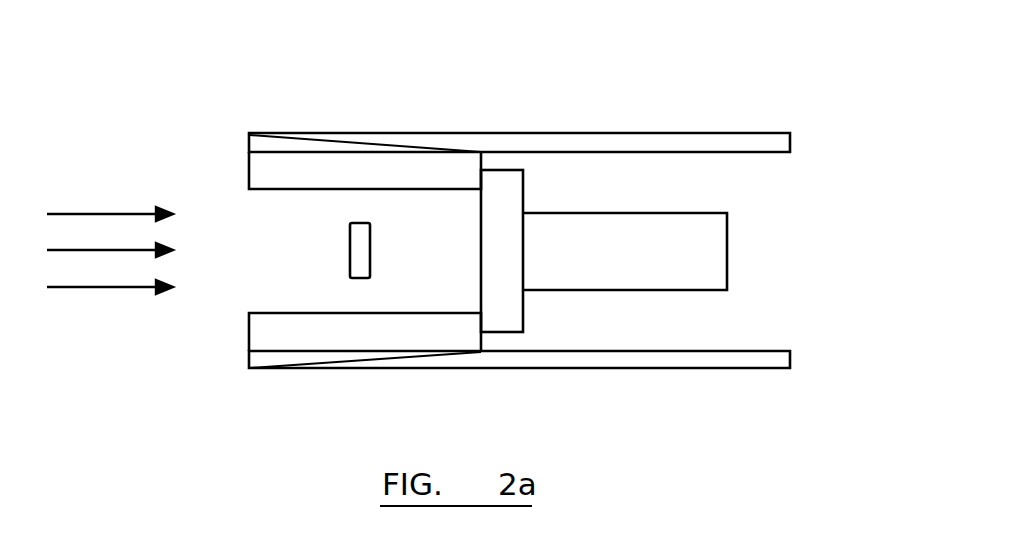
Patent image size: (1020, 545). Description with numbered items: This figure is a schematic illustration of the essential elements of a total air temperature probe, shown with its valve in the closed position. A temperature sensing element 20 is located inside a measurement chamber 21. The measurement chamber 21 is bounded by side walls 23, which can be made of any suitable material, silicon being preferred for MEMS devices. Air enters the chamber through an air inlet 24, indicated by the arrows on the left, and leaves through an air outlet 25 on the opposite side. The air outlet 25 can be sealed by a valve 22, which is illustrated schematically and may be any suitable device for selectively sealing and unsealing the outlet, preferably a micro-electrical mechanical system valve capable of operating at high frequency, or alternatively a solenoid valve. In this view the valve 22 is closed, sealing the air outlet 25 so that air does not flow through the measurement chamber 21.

The temperature sensing element 20 is at (357, 250).
The measurement chamber 21 is at (440, 222).
The valve 22 is at (662, 250).
The side walls 23 is at (357, 168).
The air inlet 24 is at (253, 258).
The air outlet 25 is at (720, 316).